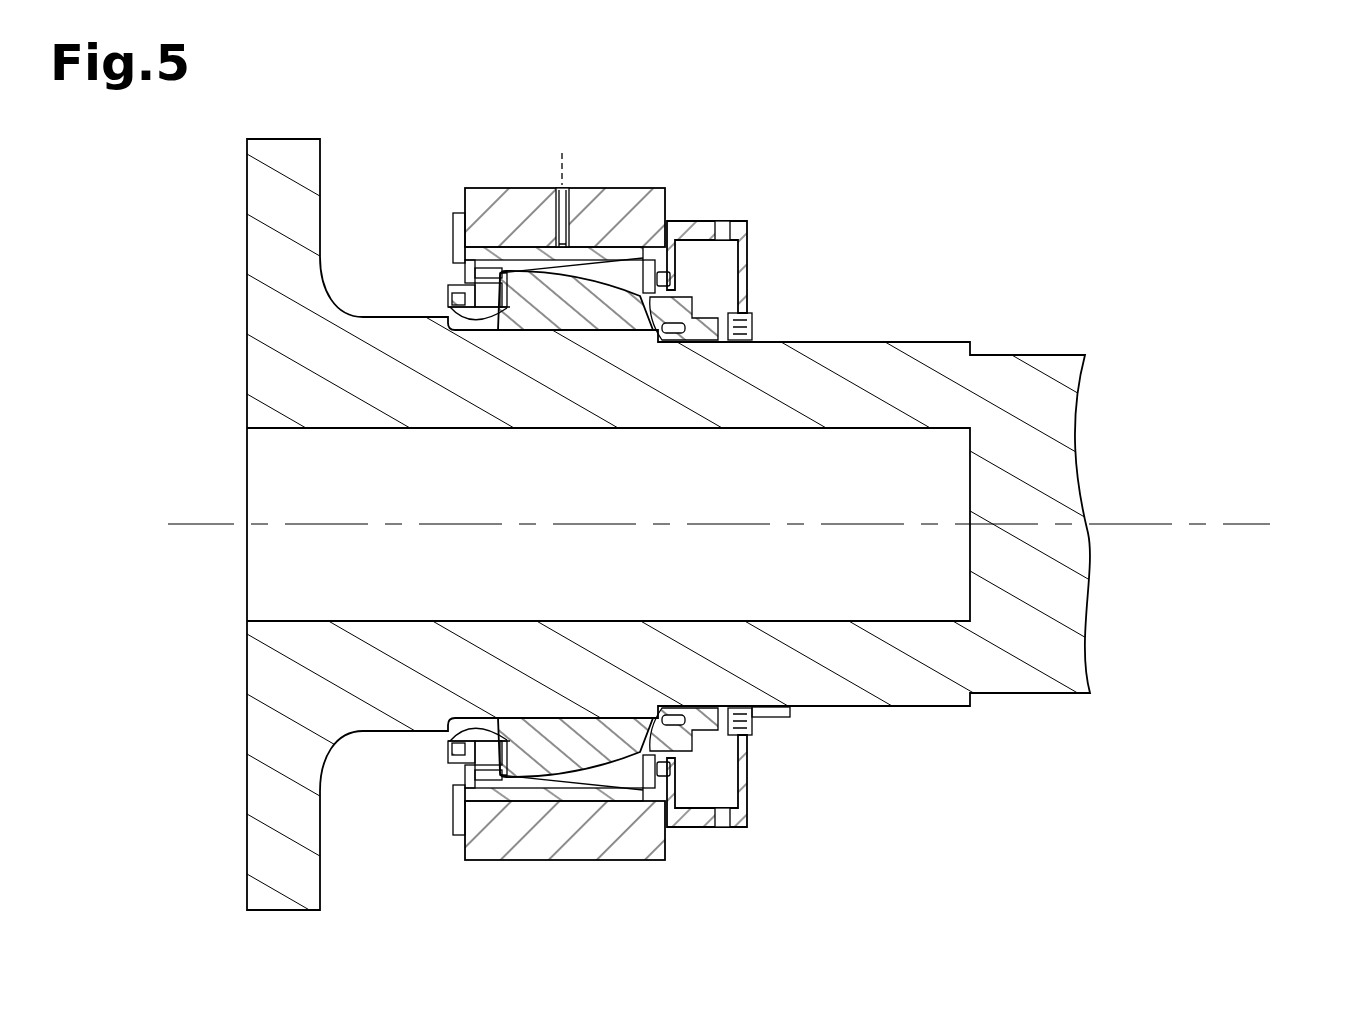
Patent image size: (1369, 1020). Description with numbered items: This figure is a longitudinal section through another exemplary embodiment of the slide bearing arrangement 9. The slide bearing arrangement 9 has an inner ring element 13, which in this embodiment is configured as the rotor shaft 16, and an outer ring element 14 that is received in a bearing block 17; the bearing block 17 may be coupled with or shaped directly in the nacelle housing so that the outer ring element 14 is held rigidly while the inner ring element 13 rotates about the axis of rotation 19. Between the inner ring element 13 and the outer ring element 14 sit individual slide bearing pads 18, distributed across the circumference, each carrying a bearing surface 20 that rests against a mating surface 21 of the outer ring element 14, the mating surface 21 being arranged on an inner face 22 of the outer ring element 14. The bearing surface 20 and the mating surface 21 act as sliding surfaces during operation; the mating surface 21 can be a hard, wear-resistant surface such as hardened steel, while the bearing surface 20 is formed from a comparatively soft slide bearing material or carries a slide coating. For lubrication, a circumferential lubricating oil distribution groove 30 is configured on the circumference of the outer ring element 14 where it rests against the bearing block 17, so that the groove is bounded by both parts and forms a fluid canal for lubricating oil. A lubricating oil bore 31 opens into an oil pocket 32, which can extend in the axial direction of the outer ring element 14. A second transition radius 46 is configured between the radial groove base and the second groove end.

The slide bearing arrangement 9 is at (1210, 128).
The inner ring element 13 is at (628, 318).
The outer ring element 14 is at (497, 244).
The rotor shaft 16 is at (927, 350).
The bearing block 17 is at (608, 182).
The slide bearing pad 18 is at (660, 228).
The axis of rotation 19 is at (1268, 520).
The bearing surface 20 is at (597, 307).
The mating surface 21 is at (664, 280).
The inner face 22 is at (448, 300).
The lubricating oil distribution groove 30 is at (561, 246).
The lubricating oil bore 31 is at (552, 246).
The oil pocket 32 is at (518, 246).
The second transition radius 46 is at (538, 805).